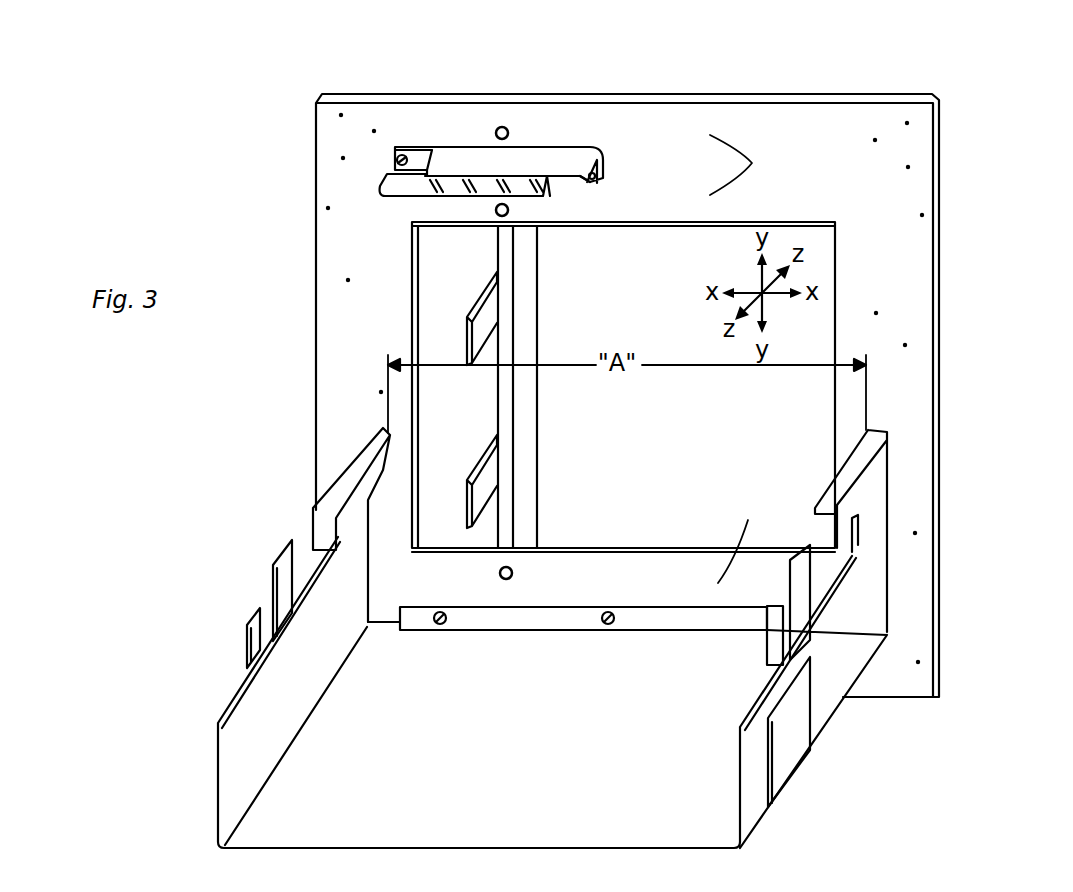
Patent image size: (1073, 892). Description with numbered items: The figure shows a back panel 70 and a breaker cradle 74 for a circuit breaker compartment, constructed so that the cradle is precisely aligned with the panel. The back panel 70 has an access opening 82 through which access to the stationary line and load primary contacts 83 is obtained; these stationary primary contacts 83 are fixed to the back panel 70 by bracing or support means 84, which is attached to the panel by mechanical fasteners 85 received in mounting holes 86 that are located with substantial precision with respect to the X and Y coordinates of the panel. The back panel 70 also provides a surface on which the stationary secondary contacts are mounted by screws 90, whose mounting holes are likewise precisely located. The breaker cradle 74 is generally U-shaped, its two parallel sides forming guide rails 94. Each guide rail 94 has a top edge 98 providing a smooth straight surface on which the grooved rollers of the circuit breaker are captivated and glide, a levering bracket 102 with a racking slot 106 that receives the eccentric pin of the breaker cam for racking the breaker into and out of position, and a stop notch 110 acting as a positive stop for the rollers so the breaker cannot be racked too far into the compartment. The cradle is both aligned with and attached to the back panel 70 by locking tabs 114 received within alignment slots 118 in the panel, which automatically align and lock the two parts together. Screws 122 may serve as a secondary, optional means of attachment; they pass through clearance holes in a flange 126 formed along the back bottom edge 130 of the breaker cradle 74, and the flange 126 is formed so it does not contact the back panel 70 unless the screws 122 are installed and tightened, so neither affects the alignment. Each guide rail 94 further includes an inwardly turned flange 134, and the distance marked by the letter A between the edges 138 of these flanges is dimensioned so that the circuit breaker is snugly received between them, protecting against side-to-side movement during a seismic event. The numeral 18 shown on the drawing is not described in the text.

The hinge bracket 18 is at (455, 148).
The back panel 70 is at (835, 98).
The breaker cradle 74 is at (511, 773).
The access opening 82 is at (840, 250).
The stationary primary contacts 83 is at (490, 478).
The bracing or support means 84 is at (527, 338).
The mechanical fasteners 85 is at (510, 568).
The mounting holes 86 is at (752, 163).
The screws 90 is at (593, 182).
The guide rails 94 is at (855, 608).
The top edge 98 is at (843, 575).
The levering bracket 102 is at (790, 752).
The racking slot 106 is at (268, 605).
The stop notch 110 is at (862, 528).
The locking tabs 114 is at (893, 488).
The alignment slots 118 is at (893, 460).
The screws 122 is at (605, 624).
The flange 126 is at (410, 612).
The back bottom edge 130 is at (370, 607).
The inwardly turned flange 134 is at (830, 490).
The edges 138 is at (815, 490).